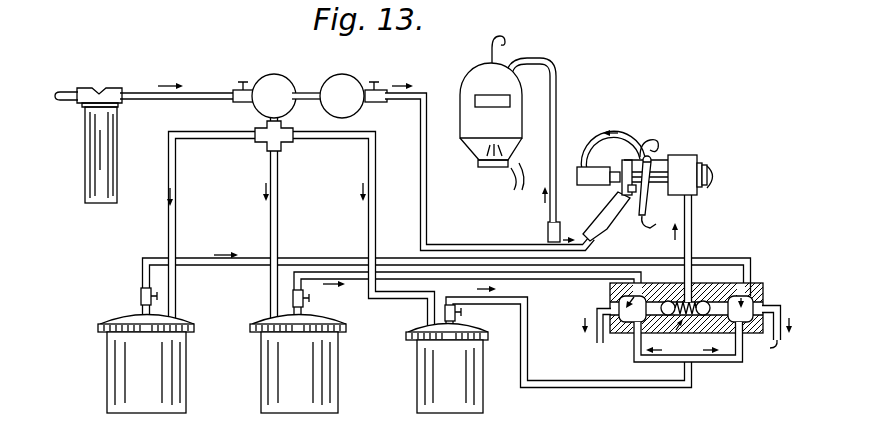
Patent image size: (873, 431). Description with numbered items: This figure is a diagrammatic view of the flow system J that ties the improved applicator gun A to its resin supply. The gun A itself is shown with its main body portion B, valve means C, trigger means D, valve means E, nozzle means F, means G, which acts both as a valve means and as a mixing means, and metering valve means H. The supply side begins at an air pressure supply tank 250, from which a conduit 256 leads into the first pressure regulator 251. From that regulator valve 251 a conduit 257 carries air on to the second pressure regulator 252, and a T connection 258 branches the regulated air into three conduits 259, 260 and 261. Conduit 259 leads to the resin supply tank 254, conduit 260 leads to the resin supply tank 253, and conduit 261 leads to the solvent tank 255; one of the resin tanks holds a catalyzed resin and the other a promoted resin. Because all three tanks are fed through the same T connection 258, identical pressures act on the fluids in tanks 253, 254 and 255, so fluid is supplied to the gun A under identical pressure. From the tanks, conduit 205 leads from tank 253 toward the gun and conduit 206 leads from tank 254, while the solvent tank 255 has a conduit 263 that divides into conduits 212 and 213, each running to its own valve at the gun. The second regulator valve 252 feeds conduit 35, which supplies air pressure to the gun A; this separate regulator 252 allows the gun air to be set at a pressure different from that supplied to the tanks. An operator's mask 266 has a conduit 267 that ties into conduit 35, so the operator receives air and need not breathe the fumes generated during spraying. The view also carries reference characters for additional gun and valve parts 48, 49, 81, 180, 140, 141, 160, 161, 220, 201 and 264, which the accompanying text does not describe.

The air pressure supply tank 250 is at (82, 150).
The conduit 256 is at (197, 91).
The pressure regulator 251 is at (283, 55).
The conduit 257 is at (312, 90).
The pressure regulator 252 is at (345, 79).
The T connection 258 is at (288, 124).
The conduit 259 is at (183, 139).
The conduit 260 is at (280, 163).
The conduit 261 is at (377, 160).
The operator's mask 266 is at (484, 152).
The conduit 267 is at (534, 61).
The conduit 35 is at (530, 242).
The air hose 48 is at (624, 127).
The hose fitting 49 is at (577, 168).
The fitting 81 is at (692, 202).
The material conduit 180 is at (691, 237).
The conduit 205 is at (204, 266).
The conduit 206 is at (338, 275).
The valve body 140 is at (707, 305).
The left valve chamber 160 is at (648, 293).
The right valve chamber 161 is at (764, 296).
The valve spool 141 is at (666, 333).
The conduit 212 is at (655, 358).
The conduit 213 is at (718, 360).
The drain outlet 220 is at (597, 341).
The conduit 263 is at (586, 386).
The solvent tank 255 is at (481, 398).
The resin supply tank 254 is at (153, 404).
The resin supply tank 253 is at (305, 408).
The third tank 201 is at (464, 378).
The tank 264 is at (670, 426).
The applicator gun A is at (654, 170).
The main body portion B is at (608, 228).
The valve means C is at (628, 185).
The trigger means D is at (649, 201).
The valve means E is at (614, 156).
The nozzle means F is at (708, 172).
The means acting as valve means and mixing means G is at (654, 190).
The metering valve means H is at (748, 231).
The flow system J is at (592, 75).